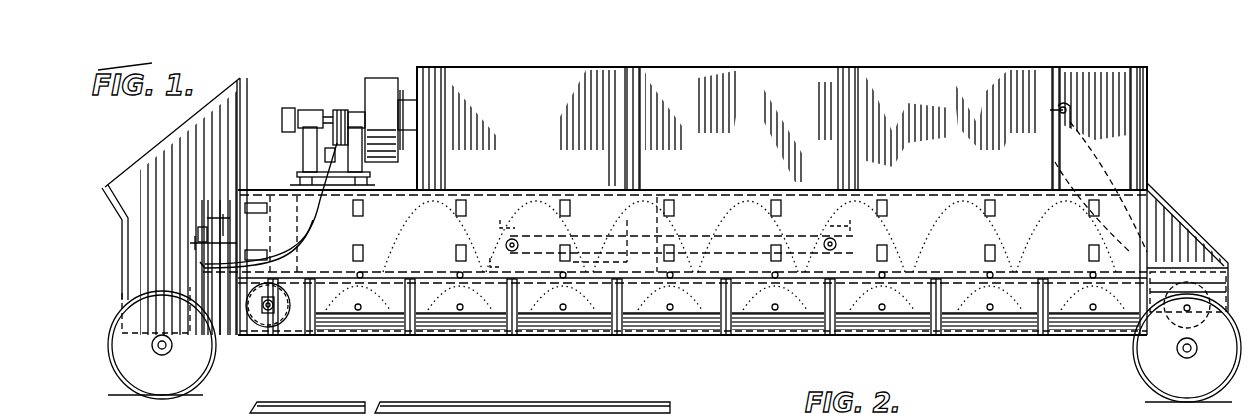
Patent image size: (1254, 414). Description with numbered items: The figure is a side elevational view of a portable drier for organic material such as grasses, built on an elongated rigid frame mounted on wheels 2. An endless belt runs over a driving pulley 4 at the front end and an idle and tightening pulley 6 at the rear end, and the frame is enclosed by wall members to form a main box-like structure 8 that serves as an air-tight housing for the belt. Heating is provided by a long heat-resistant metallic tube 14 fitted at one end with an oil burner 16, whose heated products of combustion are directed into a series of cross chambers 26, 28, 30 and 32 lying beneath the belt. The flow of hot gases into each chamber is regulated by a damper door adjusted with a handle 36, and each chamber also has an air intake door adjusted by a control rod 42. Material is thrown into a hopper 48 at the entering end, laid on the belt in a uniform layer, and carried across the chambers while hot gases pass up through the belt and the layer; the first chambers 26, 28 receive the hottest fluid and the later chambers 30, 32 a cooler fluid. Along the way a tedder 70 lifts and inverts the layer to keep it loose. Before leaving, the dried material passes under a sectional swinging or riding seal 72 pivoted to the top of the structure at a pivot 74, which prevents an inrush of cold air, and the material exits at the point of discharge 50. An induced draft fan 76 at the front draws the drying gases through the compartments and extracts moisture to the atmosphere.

In FIG. 1, the wheels 2 is at (197, 367).
In FIG. 1, the driving pulley 4 is at (286, 316).
In FIG. 1, the idle and tightening pulley 6 is at (1195, 318).
In FIG. 1, the main box-like structure 8 is at (782, 201).
In FIG. 2, the main box-like structure 8 is at (596, 413).
In FIG. 1, the heat-resistant metallic tube 14 is at (660, 194).
In FIG. 1, the oil burner 16 is at (180, 248).
In FIG. 1, the cross chamber 26 is at (352, 298).
In FIG. 1, the cross chamber 28 is at (452, 298).
In FIG. 1, the cross chamber 30 is at (544, 300).
In FIG. 1, the cross chamber 32 is at (649, 300).
In FIG. 1, the handle 36 is at (362, 274).
In FIG. 1, the adjustable control rod 42 is at (563, 310).
In FIG. 1, the hopper 48 is at (173, 142).
In FIG. 1, the point of discharge 50 is at (1201, 242).
In FIG. 1, the tedder 70 is at (515, 234).
In FIG. 1, the swinging or riding seal 72 is at (1045, 168).
In FIG. 1, the pivot 74 is at (1053, 112).
In FIG. 1, the induced draft fan 76 is at (377, 95).
In FIG. 2, the induced draft fan 76 is at (758, 413).